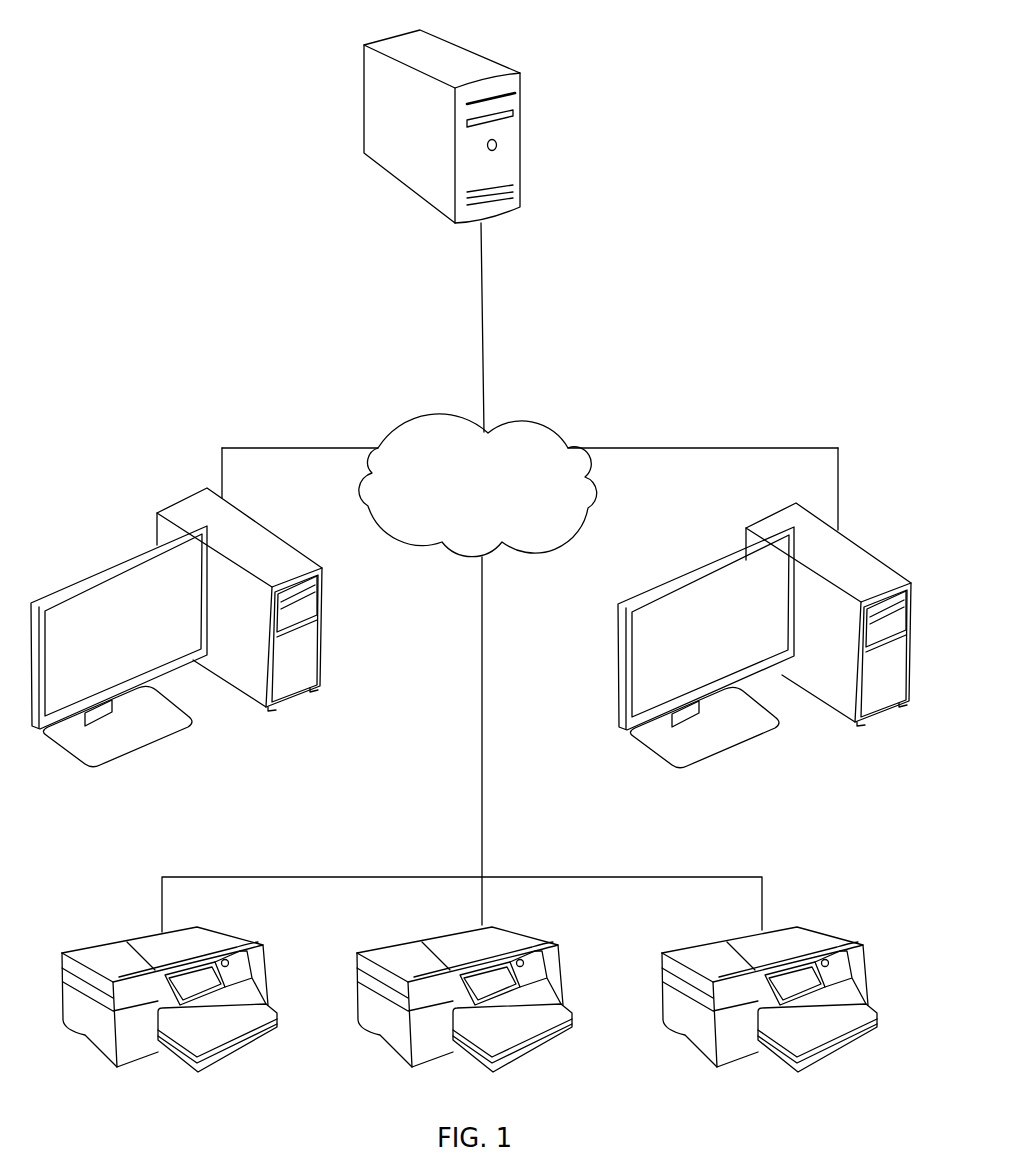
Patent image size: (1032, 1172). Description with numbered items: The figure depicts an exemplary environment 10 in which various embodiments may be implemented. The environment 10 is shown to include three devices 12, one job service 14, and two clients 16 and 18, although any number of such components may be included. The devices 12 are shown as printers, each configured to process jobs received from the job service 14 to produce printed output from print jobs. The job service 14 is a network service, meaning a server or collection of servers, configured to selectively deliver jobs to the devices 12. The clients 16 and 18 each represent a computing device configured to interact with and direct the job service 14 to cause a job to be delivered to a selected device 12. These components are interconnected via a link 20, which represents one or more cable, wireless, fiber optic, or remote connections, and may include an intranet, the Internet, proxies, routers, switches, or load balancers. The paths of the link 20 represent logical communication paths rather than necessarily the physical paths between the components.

The environment 10 is at (172, 318).
The devices 12 is at (268, 952).
The job service 14 is at (463, 53).
The client 16 is at (268, 548).
The client 18 is at (850, 552).
The link 20 is at (500, 423).